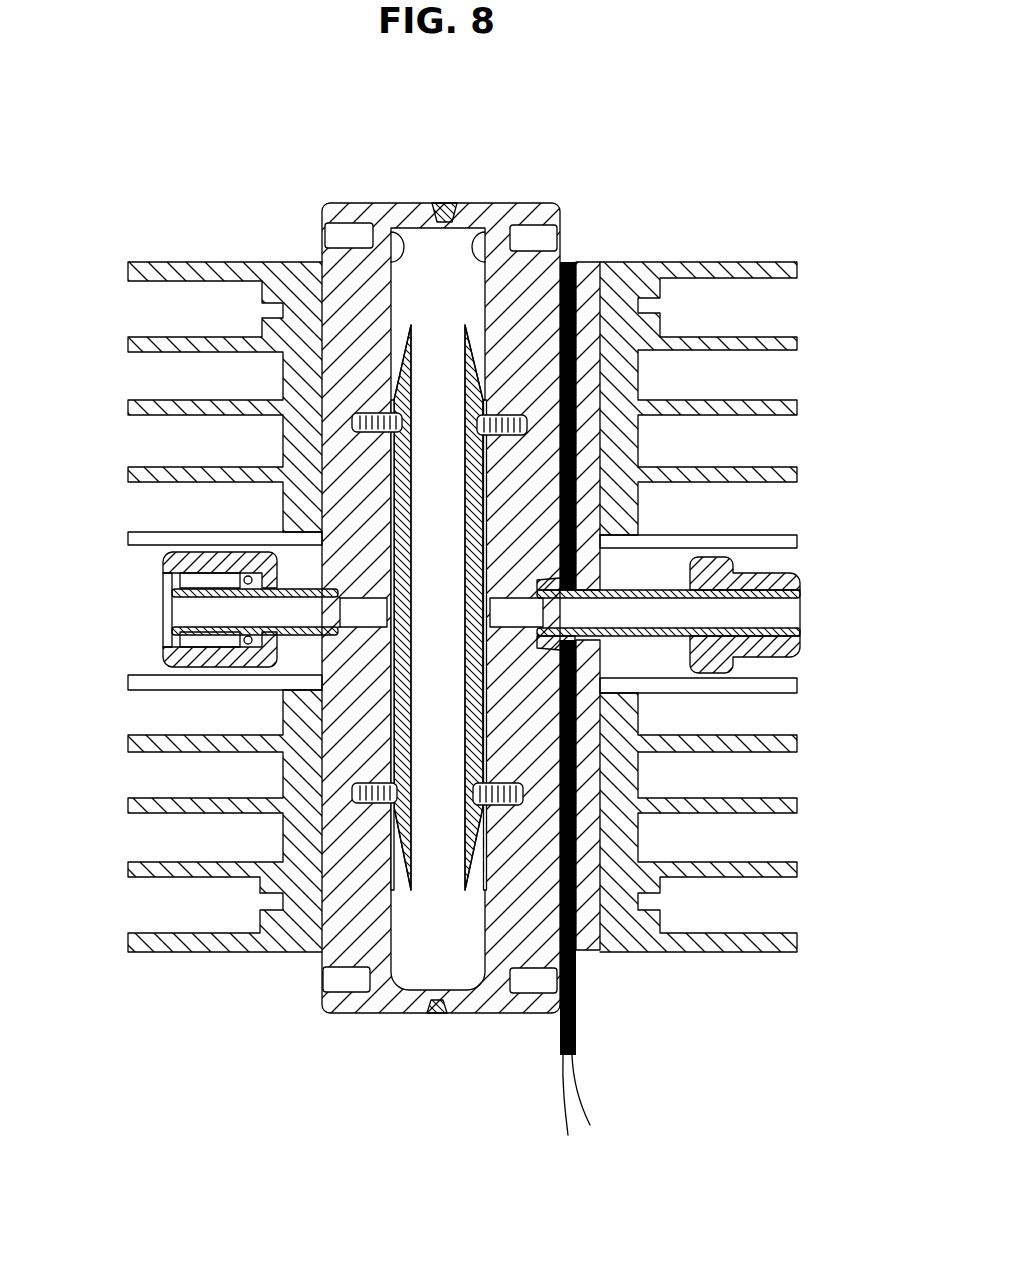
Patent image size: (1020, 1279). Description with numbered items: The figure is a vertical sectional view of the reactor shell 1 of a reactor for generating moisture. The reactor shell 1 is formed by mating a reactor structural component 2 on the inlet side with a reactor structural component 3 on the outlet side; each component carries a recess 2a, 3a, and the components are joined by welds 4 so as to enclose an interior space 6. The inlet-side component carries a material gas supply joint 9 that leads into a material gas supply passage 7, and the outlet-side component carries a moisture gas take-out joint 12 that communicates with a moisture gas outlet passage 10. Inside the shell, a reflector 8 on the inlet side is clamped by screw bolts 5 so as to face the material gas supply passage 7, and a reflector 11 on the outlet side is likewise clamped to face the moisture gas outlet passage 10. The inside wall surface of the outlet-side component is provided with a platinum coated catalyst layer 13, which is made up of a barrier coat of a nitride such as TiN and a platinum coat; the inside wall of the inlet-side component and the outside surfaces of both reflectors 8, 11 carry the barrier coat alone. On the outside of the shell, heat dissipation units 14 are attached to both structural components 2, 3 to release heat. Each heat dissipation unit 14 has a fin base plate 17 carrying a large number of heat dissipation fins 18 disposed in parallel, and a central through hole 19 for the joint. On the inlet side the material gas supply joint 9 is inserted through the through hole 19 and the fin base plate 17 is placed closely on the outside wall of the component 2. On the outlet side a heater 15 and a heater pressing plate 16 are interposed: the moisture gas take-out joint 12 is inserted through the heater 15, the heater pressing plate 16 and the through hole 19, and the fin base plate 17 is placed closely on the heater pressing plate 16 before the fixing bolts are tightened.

The reactor shell 1 is at (613, 150).
The reactor structural component on the inlet side 2 is at (362, 300).
The recess 2a is at (413, 263).
The reactor structural component on the outlet side 3 is at (540, 307).
The recess 3a is at (470, 212).
The welds 4 is at (441, 204).
The screw bolts 5 is at (387, 783).
The interior space 6 is at (452, 300).
The material gas supply passage 7 is at (323, 610).
The reflector on the inlet side 8 is at (393, 466).
The material gas supply joint 9 is at (160, 562).
The moisture gas outlet passage 10 is at (567, 612).
The reflector on the outlet side 11 is at (470, 487).
The moisture gas take-out joint 12 is at (760, 566).
The platinum coated catalyst layer 13 is at (473, 936).
The heat dissipation units 14 is at (165, 967).
The heater 15 is at (577, 1013).
The heater pressing plate 16 is at (593, 275).
The fin base plate 17 is at (300, 917).
The heat dissipation fins 18 is at (797, 343).
The through hole for the joint 19 is at (290, 557).